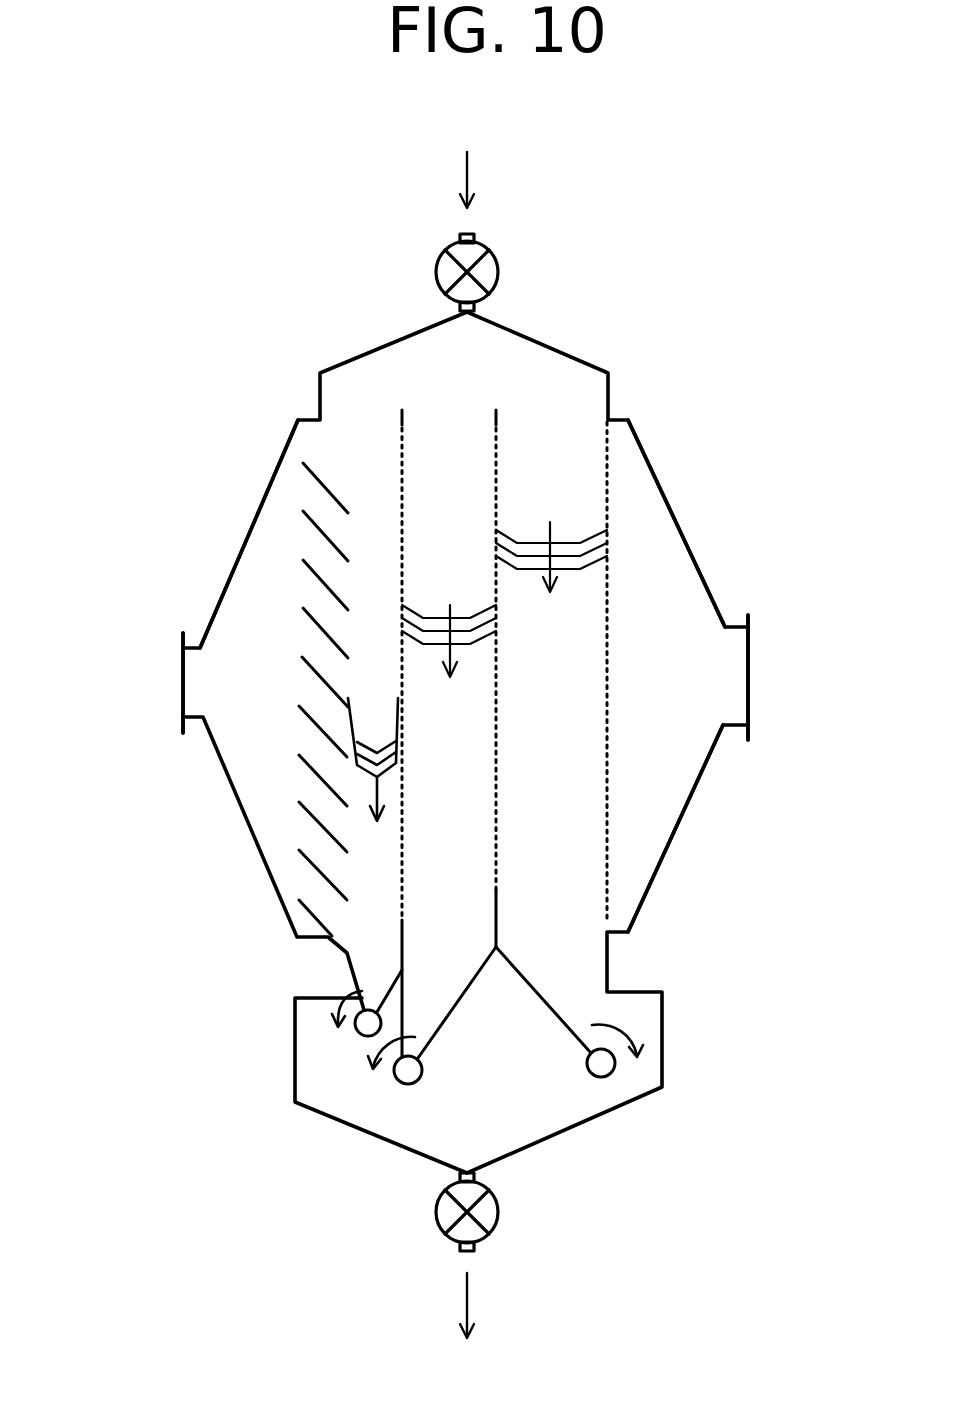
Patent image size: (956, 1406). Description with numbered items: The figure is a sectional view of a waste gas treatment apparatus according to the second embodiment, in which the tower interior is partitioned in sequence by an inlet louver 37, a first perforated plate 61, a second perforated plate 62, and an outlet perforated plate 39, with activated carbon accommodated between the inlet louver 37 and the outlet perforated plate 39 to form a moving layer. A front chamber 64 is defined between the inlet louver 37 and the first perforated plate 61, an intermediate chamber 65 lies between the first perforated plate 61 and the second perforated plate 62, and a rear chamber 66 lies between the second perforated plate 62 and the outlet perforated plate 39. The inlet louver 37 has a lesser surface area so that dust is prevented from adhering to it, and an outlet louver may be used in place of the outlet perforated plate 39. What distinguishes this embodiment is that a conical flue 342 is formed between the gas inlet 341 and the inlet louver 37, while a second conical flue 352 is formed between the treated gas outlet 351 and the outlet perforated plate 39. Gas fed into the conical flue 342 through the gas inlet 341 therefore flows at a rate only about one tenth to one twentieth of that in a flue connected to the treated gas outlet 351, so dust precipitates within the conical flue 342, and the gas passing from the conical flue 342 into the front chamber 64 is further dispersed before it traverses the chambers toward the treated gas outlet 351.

The first perforated plate 61 is at (402, 412).
The second perforated plate 62 is at (496, 412).
The front chamber 64 is at (380, 500).
The intermediate chamber 65 is at (471, 478).
The rear chamber 66 is at (578, 476).
The inlet louver 37 is at (303, 708).
The outlet perforated plate 39 is at (608, 577).
The gas inlet 341 is at (183, 663).
The conical flue 342 is at (245, 653).
The treated gas outlet 351 is at (748, 644).
The conical flue 352 is at (678, 708).